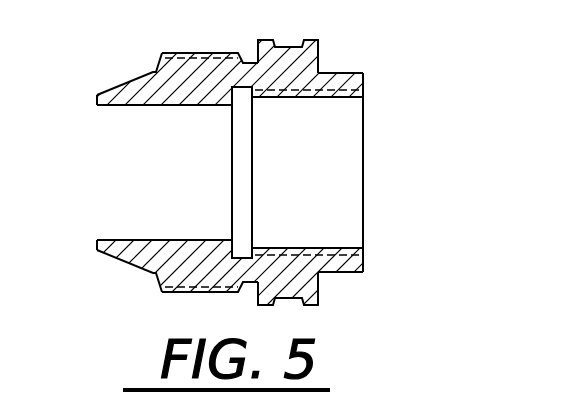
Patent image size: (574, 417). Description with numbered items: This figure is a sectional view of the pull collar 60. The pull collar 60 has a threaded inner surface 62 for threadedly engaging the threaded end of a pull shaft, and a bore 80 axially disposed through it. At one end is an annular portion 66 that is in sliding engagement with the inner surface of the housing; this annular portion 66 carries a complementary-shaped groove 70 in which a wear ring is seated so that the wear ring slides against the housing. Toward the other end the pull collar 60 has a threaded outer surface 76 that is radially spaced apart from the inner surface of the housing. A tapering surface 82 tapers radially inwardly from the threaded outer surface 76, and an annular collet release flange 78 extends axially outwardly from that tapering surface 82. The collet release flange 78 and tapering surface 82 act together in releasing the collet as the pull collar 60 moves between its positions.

The pull collar 60 is at (287, 175).
The threaded inner surface 62 is at (320, 97).
The annular portion 66 is at (308, 63).
The groove 70 is at (285, 45).
The threaded outer surface 76 is at (193, 52).
The collet release flange 78 is at (98, 95).
The bore 80 is at (118, 173).
The tapering surface 82 is at (138, 78).